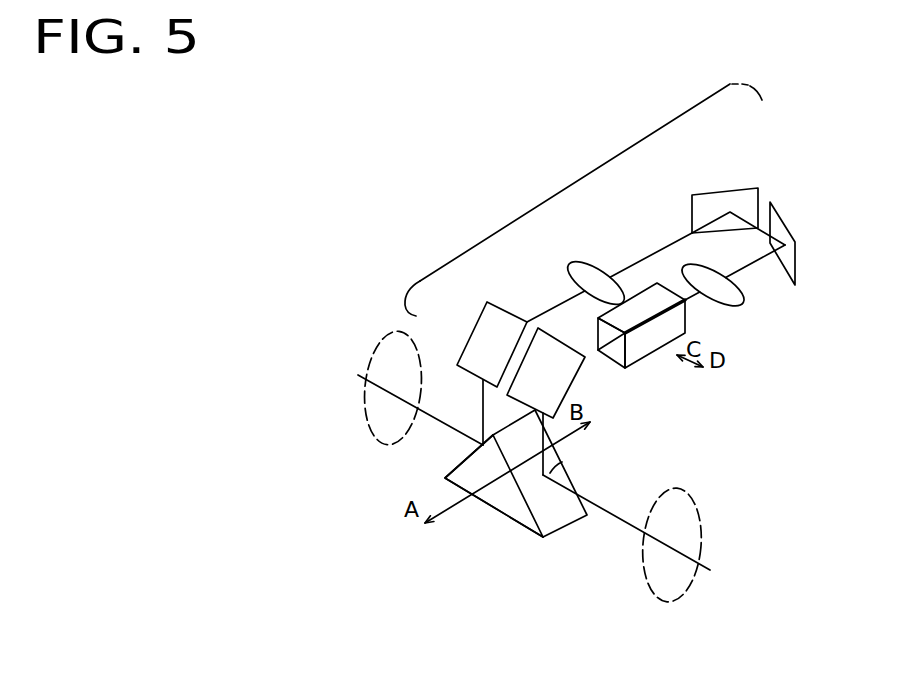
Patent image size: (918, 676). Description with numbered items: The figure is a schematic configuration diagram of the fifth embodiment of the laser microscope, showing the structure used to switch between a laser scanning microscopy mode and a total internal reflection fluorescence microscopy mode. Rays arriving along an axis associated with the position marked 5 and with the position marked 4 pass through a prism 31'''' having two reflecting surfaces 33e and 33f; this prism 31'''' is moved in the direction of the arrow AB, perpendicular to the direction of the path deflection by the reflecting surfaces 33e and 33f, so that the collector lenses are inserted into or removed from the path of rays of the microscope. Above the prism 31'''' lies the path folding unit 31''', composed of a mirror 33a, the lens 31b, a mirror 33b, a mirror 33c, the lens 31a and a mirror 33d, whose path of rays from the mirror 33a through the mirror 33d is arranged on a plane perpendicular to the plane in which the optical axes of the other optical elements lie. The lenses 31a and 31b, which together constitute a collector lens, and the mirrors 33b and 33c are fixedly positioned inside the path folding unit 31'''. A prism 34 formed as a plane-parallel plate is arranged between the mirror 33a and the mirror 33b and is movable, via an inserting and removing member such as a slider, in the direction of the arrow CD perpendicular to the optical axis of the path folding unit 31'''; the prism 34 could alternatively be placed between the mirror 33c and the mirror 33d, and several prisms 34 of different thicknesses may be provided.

The light source / emitting point 5 is at (398, 322).
The light receiving element / detection point 4 is at (675, 490).
The path folding unit 31''' is at (583, 200).
The prism 31'''' is at (613, 455).
The lens 31a is at (572, 270).
The lens 31b is at (732, 299).
The mirror 33a is at (555, 378).
The mirror 33b is at (845, 231).
The mirror 33c is at (712, 194).
The mirror 33d is at (477, 342).
The reflecting surface 33e is at (540, 490).
The reflecting surface 33f is at (462, 461).
The prism 34 is at (648, 347).